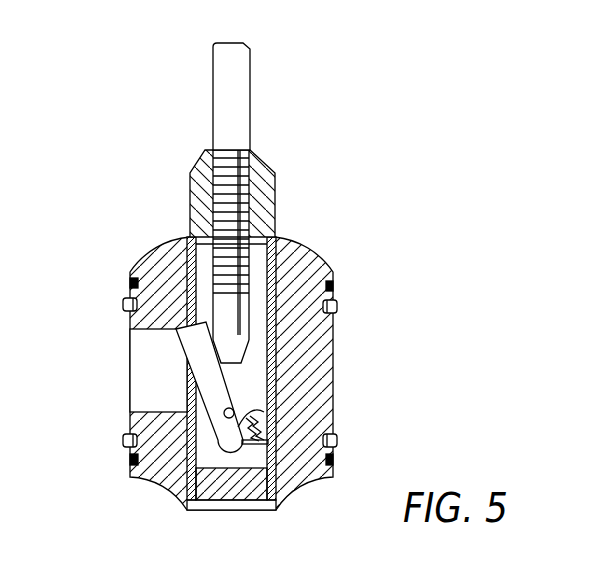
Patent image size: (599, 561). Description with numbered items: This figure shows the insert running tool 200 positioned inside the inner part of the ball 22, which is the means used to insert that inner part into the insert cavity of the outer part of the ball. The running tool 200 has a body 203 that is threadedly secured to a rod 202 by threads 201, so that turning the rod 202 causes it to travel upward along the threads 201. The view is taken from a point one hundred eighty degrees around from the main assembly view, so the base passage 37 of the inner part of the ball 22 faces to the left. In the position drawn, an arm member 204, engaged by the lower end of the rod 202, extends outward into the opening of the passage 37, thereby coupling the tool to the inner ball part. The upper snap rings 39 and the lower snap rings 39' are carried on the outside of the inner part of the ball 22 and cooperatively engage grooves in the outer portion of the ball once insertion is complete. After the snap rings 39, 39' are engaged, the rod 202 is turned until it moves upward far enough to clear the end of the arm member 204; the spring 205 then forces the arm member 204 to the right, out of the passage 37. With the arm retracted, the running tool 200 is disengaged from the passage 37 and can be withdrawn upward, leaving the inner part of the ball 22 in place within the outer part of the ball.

The insert running tool 200 is at (129, 192).
The threads 201 is at (250, 177).
The rod 202 is at (240, 68).
The body 203 is at (262, 208).
The arm member 204 is at (240, 386).
The spring 205 is at (262, 416).
The inner part of the ball 22 is at (308, 264).
The base passage 37 is at (165, 378).
The upper snap rings 39 is at (255, 302).
The lower snap rings 39' is at (258, 435).